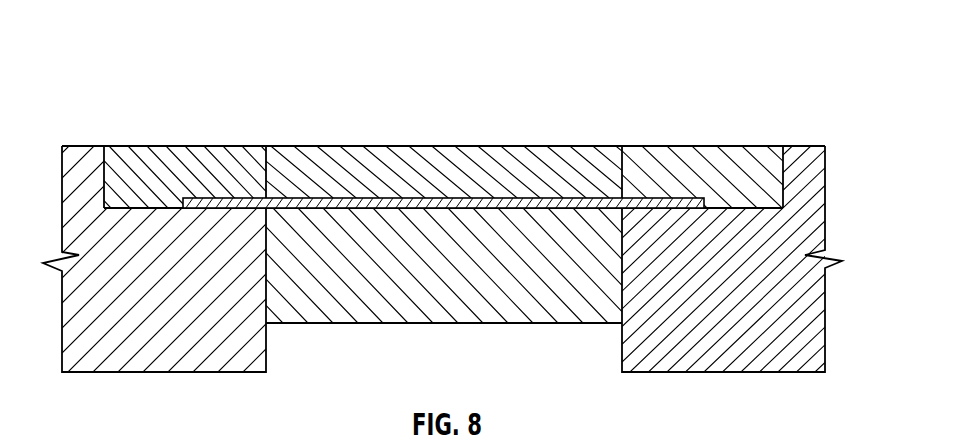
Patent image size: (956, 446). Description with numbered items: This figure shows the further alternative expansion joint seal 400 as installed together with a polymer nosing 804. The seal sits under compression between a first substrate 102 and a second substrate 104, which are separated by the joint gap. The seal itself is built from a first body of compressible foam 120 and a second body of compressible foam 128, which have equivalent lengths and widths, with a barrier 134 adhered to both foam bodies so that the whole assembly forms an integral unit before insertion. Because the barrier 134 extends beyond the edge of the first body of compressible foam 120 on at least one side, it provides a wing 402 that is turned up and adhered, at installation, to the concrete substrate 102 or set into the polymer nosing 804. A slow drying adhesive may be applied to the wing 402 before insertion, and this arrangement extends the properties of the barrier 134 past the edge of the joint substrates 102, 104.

The first substrate 102 is at (173, 301).
The second substrate 104 is at (754, 300).
The first body of compressible foam 120 is at (464, 182).
The second body of compressible foam 128 is at (464, 276).
The barrier 134 is at (695, 200).
The alternative embodiment 400 is at (547, 146).
The wing 402 is at (230, 197).
The polymer nosing 804 is at (758, 177).